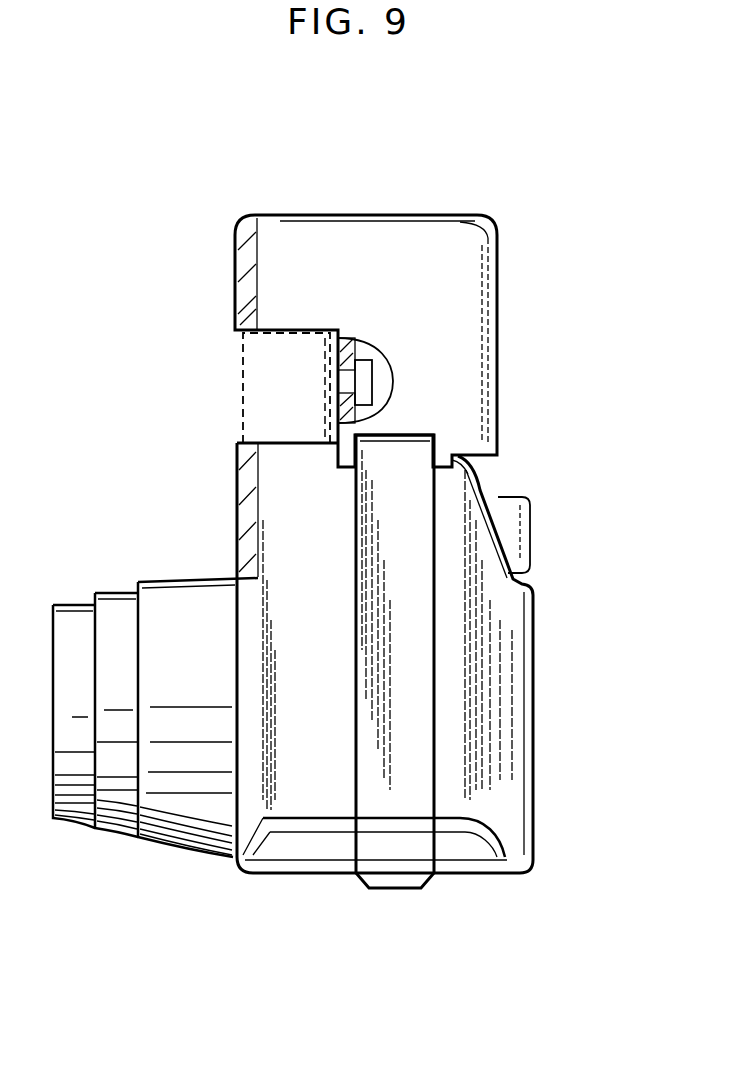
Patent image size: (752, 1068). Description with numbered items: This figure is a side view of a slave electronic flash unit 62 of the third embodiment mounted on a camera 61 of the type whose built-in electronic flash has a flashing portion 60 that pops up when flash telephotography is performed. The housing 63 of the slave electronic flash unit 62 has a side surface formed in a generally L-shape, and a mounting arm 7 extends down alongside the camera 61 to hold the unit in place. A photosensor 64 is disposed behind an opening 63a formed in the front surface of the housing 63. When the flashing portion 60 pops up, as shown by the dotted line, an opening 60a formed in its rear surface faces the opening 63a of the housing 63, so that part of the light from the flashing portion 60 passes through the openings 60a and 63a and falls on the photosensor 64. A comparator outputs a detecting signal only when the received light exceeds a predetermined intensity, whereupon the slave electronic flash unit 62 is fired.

The mounting arm 7 is at (366, 650).
The flashing portion 60 is at (243, 383).
The opening 60a is at (328, 390).
The camera 61 is at (553, 704).
The slave electronic flash unit 62 is at (423, 178).
The housing 63 is at (468, 296).
The opening 63a is at (348, 342).
The photosensor 64 is at (364, 385).